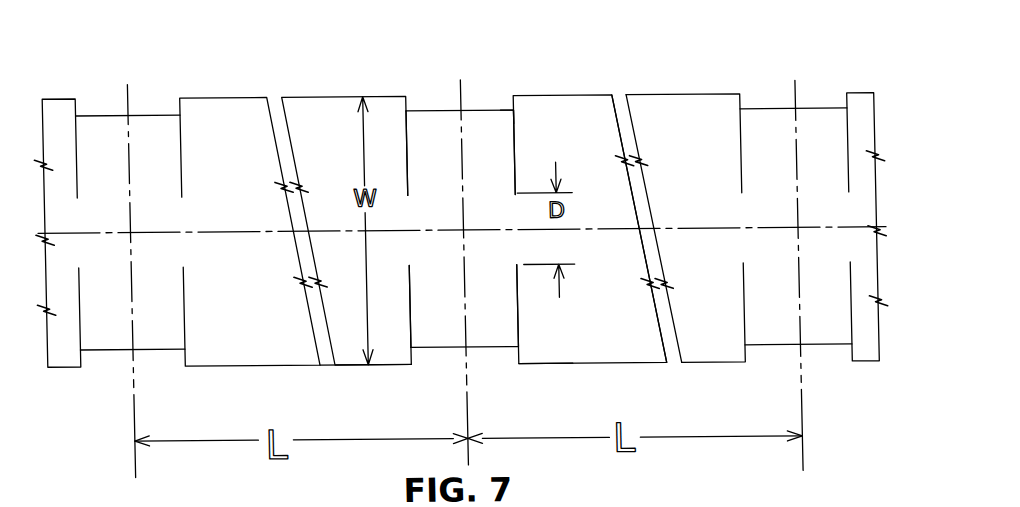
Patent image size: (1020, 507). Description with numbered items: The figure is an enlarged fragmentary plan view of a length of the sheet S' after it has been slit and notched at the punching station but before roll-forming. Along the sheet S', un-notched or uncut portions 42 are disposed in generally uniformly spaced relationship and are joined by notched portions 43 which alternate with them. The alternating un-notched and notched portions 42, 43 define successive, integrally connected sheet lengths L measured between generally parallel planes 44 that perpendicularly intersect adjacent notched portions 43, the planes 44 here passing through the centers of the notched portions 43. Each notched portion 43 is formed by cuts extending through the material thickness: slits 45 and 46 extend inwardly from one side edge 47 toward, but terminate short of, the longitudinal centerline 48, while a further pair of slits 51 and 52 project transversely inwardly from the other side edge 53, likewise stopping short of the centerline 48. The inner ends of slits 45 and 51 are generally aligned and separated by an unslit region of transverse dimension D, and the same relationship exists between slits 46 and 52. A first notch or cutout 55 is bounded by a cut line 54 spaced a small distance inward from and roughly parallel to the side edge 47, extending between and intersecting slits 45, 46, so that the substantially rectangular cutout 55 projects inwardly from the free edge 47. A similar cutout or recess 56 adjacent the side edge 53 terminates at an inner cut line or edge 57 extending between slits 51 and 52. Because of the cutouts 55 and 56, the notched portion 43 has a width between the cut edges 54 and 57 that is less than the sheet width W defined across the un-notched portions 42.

The un-notched portions 42 is at (626, 85).
The notched portions 43 is at (487, 111).
The parallel planes 44 is at (131, 95).
The slit 45 is at (516, 160).
The slit 46 is at (440, 158).
The side edge 47 is at (296, 94).
The longitudinal centerline 48 is at (678, 230).
The slit 51 is at (516, 289).
The slit 52 is at (410, 290).
The side edge 53 is at (357, 364).
The cut line 54 is at (503, 110).
The first notch or cutout 55 is at (431, 110).
The cutout or recess 56 is at (500, 347).
The inner cut line or edge 57 is at (440, 347).
The sheet S' is at (456, 49).